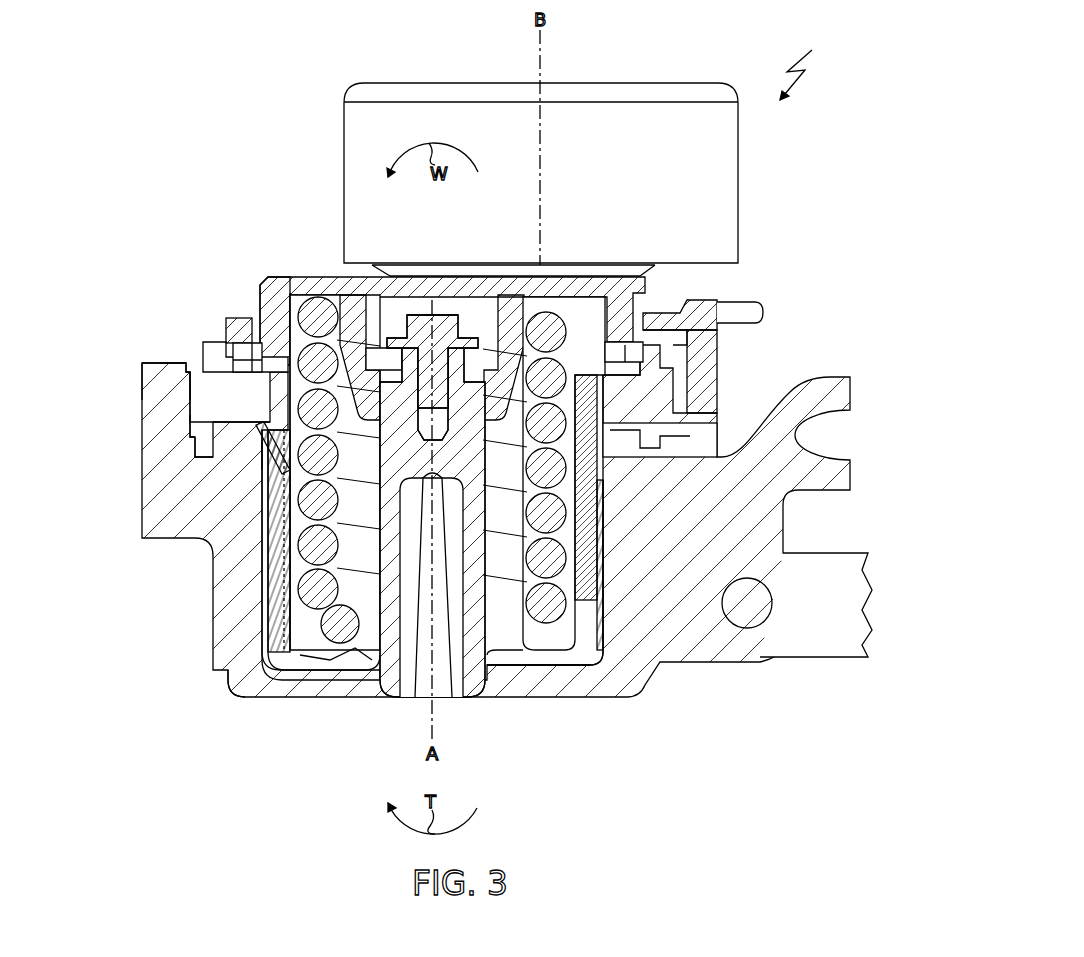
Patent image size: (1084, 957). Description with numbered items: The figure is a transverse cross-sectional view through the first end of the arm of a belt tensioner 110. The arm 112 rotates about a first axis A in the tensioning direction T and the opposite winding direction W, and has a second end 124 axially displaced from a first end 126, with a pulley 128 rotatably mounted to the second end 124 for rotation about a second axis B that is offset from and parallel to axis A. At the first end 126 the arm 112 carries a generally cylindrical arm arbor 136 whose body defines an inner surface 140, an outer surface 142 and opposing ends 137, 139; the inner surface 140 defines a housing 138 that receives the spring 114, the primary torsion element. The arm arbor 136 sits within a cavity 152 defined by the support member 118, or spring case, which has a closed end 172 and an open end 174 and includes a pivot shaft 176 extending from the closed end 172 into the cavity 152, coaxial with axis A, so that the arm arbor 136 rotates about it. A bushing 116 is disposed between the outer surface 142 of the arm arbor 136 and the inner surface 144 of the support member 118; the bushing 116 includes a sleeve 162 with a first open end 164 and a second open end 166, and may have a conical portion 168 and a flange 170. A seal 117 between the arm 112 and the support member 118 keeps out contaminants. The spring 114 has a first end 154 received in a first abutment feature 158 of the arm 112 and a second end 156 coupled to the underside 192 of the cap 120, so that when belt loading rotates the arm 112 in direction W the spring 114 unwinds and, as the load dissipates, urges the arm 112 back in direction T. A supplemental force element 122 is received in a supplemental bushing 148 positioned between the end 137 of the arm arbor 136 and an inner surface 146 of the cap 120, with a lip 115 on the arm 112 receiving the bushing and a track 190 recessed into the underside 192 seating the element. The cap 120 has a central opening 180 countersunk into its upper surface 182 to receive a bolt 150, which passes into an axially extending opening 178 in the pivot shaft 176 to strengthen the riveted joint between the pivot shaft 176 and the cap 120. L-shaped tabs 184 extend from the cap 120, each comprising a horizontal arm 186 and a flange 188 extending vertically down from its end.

The belt tensioner 110 is at (814, 67).
The arm 112 is at (198, 388).
The spring 114 is at (368, 320).
The lip 115 is at (210, 345).
The bushing 116 is at (263, 565).
The seal 117 is at (193, 450).
The support member 118 is at (718, 660).
The cap 120 is at (287, 280).
The supplemental force element 122 is at (237, 327).
The second end 124 is at (616, 292).
The first end 126 is at (275, 473).
The pulley 128 is at (735, 195).
The arm arbor 136 is at (277, 500).
The end 137 is at (165, 363).
The housing 138 is at (578, 452).
The end 139 is at (317, 660).
The inner surface 140 is at (580, 414).
The outer surface 142 is at (596, 505).
The inner surface 144 is at (603, 632).
The inner surface 146 is at (640, 325).
The supplemental bushing 148 is at (230, 397).
The bolt 150 is at (425, 312).
The cavity 152 is at (300, 675).
The first end 154 is at (358, 645).
The second end 156 is at (318, 312).
The first abutment feature 158 is at (383, 640).
The sleeve 162 is at (603, 563).
The first open end 164 is at (265, 432).
The second open end 166 is at (260, 662).
The conical portion 168 is at (262, 460).
The flange 170 is at (192, 430).
The closed end 172 is at (498, 693).
The open end 174 is at (150, 363).
The pivot shaft 176 is at (440, 640).
The axially extending opening 178 is at (445, 357).
The opening 180 is at (387, 365).
The upper surface 182 is at (482, 362).
The tabs 184 is at (718, 352).
The arm 186 is at (660, 328).
The flange 188 is at (718, 372).
The track 190 is at (247, 342).
The underside 192 is at (250, 343).